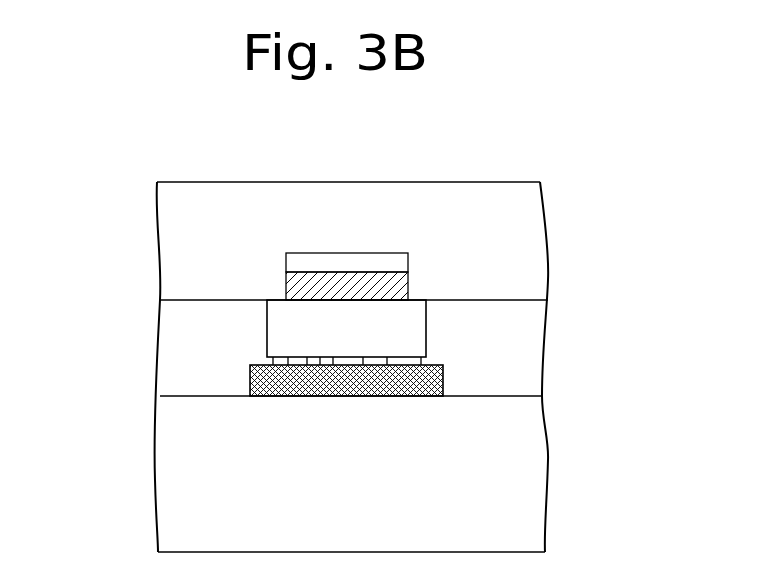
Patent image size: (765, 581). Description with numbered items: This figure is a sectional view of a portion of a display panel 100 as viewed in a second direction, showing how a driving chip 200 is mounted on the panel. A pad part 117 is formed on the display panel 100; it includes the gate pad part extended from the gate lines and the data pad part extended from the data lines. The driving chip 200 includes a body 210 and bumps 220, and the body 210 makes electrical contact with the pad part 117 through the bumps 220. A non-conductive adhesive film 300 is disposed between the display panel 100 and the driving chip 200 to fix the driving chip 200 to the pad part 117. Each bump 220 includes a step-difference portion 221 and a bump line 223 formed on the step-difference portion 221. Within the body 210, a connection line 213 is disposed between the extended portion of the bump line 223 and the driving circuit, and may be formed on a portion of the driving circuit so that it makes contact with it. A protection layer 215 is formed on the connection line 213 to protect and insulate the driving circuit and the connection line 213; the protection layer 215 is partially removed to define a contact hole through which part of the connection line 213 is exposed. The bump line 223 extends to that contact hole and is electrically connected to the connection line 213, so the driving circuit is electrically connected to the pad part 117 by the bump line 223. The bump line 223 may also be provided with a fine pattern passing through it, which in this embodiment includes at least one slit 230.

The display panel 100 is at (532, 477).
The pad part 117 is at (401, 385).
The driving chip 200 is at (632, 230).
The body 210 is at (522, 243).
The connection line 213 is at (298, 263).
The protection layer 215 is at (297, 283).
The bump 220 is at (410, 323).
The step-difference portion 221 is at (283, 330).
The bump line 223 is at (288, 362).
The slit 230 is at (320, 362).
The non-conductive adhesive film 300 is at (532, 369).